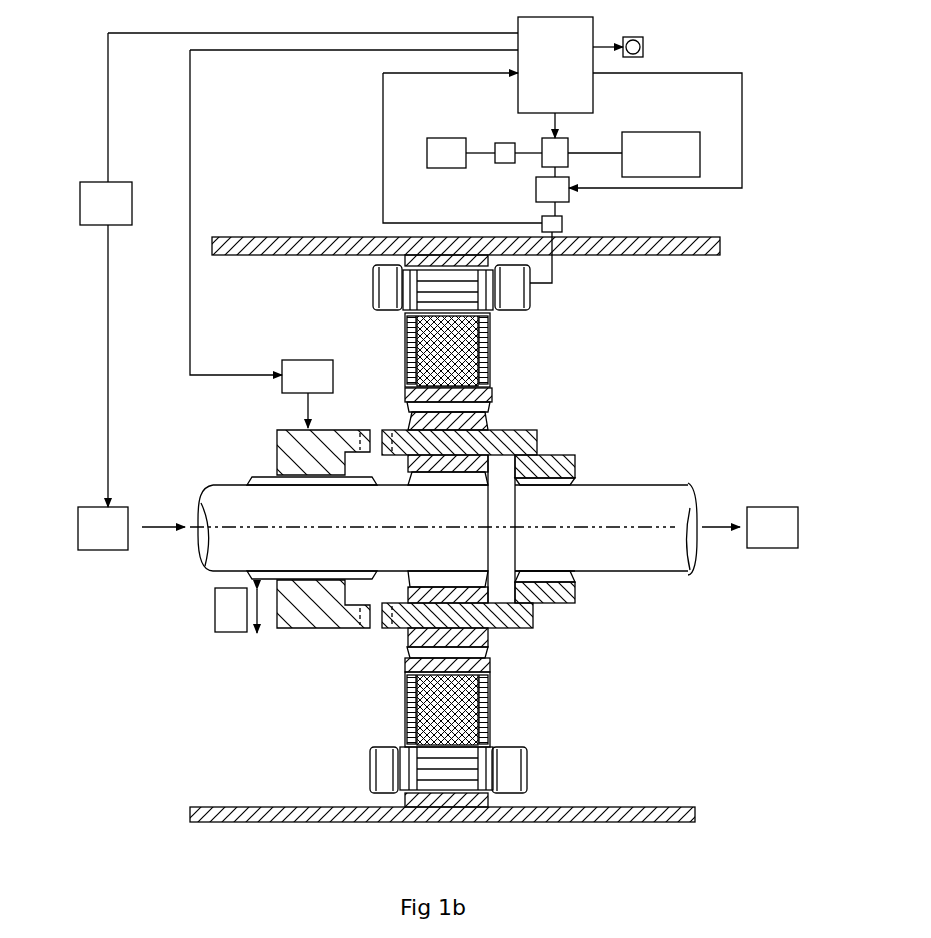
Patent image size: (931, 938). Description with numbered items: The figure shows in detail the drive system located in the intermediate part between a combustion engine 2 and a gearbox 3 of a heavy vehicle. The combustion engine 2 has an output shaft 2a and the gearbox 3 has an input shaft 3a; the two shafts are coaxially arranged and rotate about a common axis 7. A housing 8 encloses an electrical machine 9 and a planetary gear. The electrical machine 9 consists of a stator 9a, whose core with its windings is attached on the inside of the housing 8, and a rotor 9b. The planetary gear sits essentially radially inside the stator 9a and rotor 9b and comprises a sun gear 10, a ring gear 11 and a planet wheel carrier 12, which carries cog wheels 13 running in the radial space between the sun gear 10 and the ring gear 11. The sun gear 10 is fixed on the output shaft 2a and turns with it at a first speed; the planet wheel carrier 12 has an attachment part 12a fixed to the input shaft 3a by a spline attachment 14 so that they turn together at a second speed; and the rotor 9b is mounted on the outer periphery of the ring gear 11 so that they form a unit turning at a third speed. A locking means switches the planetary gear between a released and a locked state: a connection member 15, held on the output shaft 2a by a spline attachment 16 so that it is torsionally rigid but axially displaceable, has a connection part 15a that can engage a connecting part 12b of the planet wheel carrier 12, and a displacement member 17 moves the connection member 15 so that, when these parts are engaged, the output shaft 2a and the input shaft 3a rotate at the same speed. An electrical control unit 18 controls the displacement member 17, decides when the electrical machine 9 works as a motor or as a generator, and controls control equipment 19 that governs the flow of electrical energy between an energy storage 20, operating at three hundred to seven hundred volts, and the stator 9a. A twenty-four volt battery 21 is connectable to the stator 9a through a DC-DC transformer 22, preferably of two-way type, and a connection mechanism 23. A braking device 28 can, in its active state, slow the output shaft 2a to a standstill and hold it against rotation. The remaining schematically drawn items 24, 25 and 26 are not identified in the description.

The combustion engine 2 is at (105, 532).
The output shaft 2a is at (217, 540).
The gearbox 3 is at (773, 532).
The input shaft 3a is at (635, 553).
The axis 7 is at (640, 527).
The housing 8 is at (292, 807).
The electrical machine 9 is at (420, 519).
The stator 9a is at (512, 298).
The rotor 9b is at (437, 348).
The sun gear 10 is at (432, 478).
The ring gear 11 is at (473, 394).
The planet wheel carrier 12 is at (520, 453).
The attachment part 12a is at (547, 588).
The connecting part 12b is at (380, 622).
The cog wheels 13 is at (460, 422).
The spline attachment 14 is at (570, 583).
The connection member 15 is at (293, 463).
The connection part 15a is at (345, 628).
The spline attachment 16 is at (283, 482).
The displacement member 17 is at (310, 368).
The electrical control unit 18 is at (543, 79).
The control equipment 19 is at (557, 188).
The energy storage 20 is at (658, 147).
The battery 21 is at (446, 148).
The DC-DC transformer 22 is at (505, 148).
The connection mechanism 23 is at (553, 152).
The connector 24 is at (562, 223).
The indicator 25 is at (643, 58).
The sensor 26 is at (108, 200).
The braking device 28 is at (223, 627).